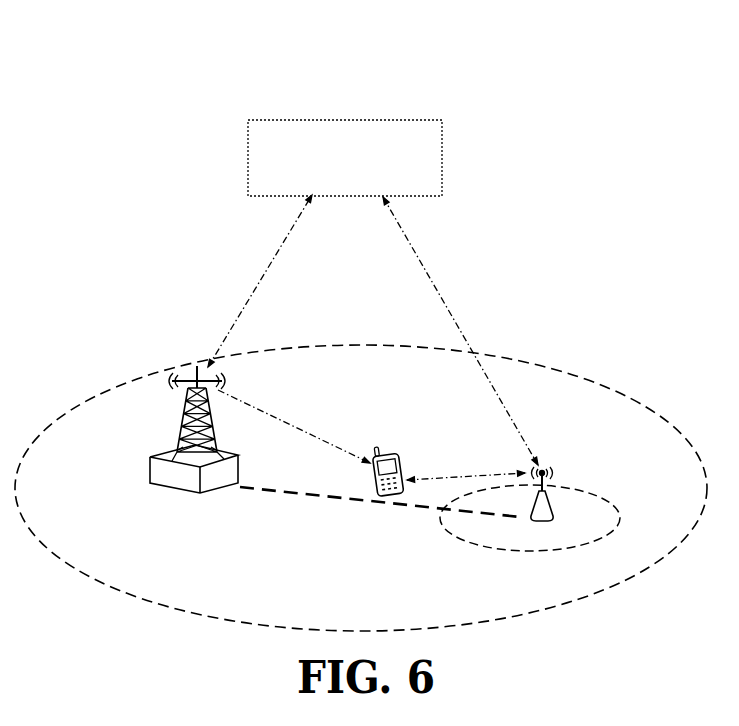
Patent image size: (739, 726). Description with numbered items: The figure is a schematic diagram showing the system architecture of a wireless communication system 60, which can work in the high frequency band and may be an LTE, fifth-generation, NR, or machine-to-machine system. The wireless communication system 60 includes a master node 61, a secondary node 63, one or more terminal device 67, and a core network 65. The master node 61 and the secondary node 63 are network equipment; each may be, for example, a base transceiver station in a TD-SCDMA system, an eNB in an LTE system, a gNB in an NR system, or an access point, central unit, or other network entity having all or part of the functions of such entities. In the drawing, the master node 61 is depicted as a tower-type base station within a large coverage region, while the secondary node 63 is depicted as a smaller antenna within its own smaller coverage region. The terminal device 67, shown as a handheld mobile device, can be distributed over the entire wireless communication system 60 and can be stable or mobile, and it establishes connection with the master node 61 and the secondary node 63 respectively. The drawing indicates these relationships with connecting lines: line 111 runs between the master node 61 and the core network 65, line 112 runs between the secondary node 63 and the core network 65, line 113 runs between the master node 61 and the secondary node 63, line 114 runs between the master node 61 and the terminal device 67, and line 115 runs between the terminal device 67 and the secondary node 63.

The wireless communication system 60 is at (655, 81).
The master node 61 is at (212, 374).
The secondary node 63 is at (556, 473).
The core network 65 is at (382, 120).
The terminal device 67 is at (391, 452).
The backhaul link between base station and core network 111 is at (262, 275).
The backhaul link between small cell and core network 112 is at (443, 296).
The link between base station and small cell 113 is at (325, 497).
The wireless link between base station and user equipment 114 is at (300, 430).
The wireless link between user equipment and small cell 115 is at (453, 472).